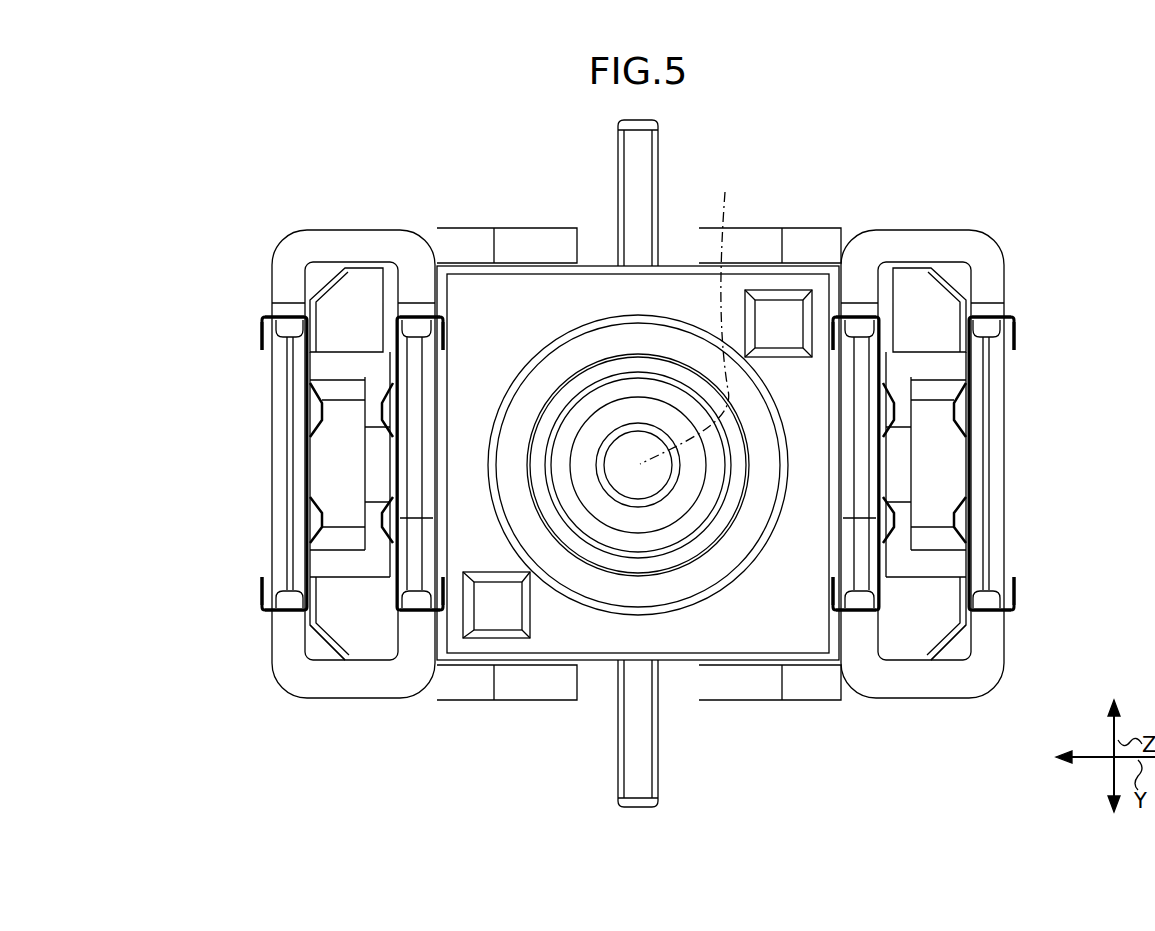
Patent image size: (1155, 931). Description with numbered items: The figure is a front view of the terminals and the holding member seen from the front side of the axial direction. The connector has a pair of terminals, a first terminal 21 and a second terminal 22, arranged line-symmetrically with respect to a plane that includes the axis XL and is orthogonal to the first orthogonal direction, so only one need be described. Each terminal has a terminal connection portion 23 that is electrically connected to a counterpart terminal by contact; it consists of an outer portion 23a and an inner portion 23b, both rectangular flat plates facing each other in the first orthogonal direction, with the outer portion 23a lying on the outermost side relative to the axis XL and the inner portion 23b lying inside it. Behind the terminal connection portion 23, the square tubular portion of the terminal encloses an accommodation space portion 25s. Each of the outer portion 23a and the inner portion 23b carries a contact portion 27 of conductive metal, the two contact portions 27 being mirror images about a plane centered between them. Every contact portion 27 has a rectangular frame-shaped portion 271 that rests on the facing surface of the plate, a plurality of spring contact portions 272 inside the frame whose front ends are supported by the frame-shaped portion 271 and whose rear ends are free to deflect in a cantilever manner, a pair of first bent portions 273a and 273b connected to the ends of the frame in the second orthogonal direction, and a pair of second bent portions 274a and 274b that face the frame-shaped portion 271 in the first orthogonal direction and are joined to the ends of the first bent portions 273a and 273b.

The first terminal 21 is at (1008, 241).
The second terminal 22 is at (268, 241).
The terminal connection portion 23 is at (178, 462).
The outer portion 23a is at (866, 472).
The inner portion 23b is at (884, 522).
The accommodation space portion 25s is at (938, 436).
The contact portion 27 is at (256, 324).
The frame-shaped portion 271 is at (377, 640).
The spring contact portion 272 is at (393, 535).
The first bent portion 273a is at (982, 305).
The first bent portion 273b is at (420, 612).
The second bent portion 274a is at (1014, 336).
The second bent portion 274b is at (443, 612).
The axis XL is at (690, 315).